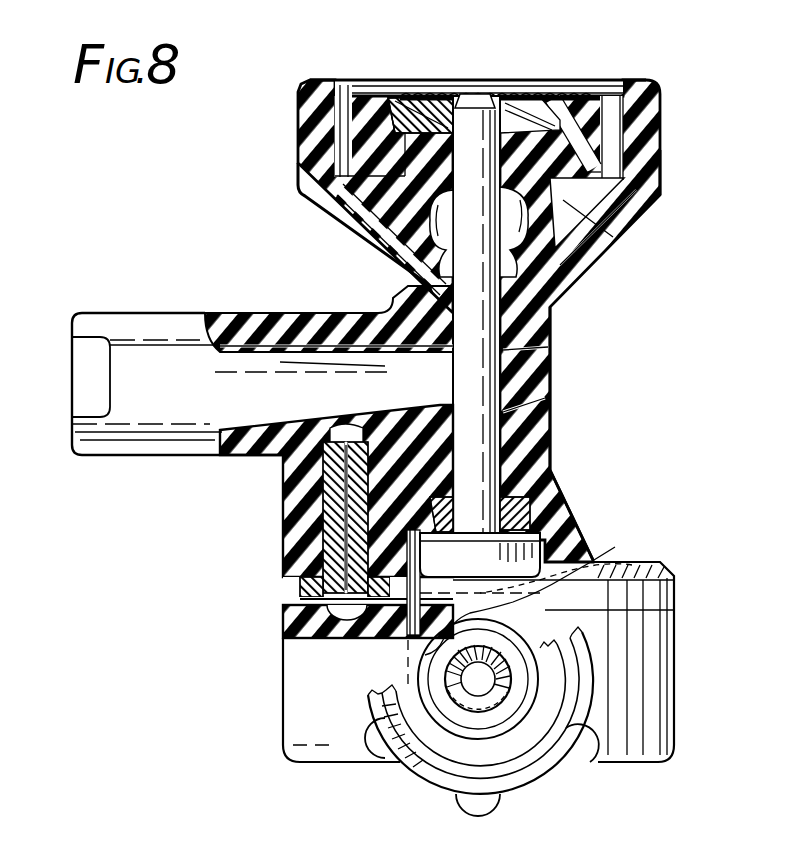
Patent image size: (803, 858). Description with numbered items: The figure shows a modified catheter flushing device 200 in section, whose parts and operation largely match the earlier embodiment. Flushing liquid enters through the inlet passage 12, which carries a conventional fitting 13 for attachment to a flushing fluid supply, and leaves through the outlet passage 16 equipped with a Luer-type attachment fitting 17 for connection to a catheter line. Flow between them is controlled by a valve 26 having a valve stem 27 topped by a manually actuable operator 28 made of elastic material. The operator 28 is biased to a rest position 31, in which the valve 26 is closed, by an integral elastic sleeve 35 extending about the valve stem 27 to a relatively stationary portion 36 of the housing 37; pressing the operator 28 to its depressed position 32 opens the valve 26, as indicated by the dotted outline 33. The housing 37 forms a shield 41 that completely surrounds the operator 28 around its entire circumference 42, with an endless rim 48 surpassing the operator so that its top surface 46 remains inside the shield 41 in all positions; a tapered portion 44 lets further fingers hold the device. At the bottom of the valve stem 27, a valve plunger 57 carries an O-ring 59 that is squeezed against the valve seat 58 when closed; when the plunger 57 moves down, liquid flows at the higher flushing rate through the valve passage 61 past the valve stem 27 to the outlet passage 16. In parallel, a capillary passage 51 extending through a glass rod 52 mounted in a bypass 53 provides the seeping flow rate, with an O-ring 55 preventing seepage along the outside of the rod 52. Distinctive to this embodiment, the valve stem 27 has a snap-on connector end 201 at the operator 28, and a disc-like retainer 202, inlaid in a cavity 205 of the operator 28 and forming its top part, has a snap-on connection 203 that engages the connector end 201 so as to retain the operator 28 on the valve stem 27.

The catheter flushing device 200 is at (238, 266).
The inlet passage 12 is at (137, 309).
The fitting 13 is at (84, 384).
The depressed position 32 is at (358, 74).
The cavity 205 is at (403, 93).
The snap-on connection 203 is at (405, 94).
The top surface 46 is at (462, 90).
The snap-on connector end 201 is at (472, 92).
The retainer 202 is at (525, 94).
The rest position 31 is at (580, 94).
The endless rim 48 is at (636, 80).
The circumference 42 is at (298, 130).
The shield 41 is at (296, 170).
The tapered portion 44 is at (342, 247).
The operator 28 is at (652, 198).
The elastic sleeve 35 is at (614, 234).
The relatively stationary portion 36 is at (550, 306).
The valve stem 27 is at (548, 352).
The bypass 53 is at (355, 436).
The valve passage 61 is at (520, 418).
The housing 37 is at (558, 453).
The capillary passage 51 is at (332, 505).
The rod 52 is at (346, 503).
The valve seat 58 is at (420, 518).
The O-ring 59 is at (507, 507).
The O-ring 55 is at (300, 585).
The valve 26 is at (527, 592).
The dotted outline 33 is at (632, 565).
The valve plunger 57 is at (408, 662).
The outlet passage 16 is at (458, 722).
The attachment fitting 17 is at (536, 782).